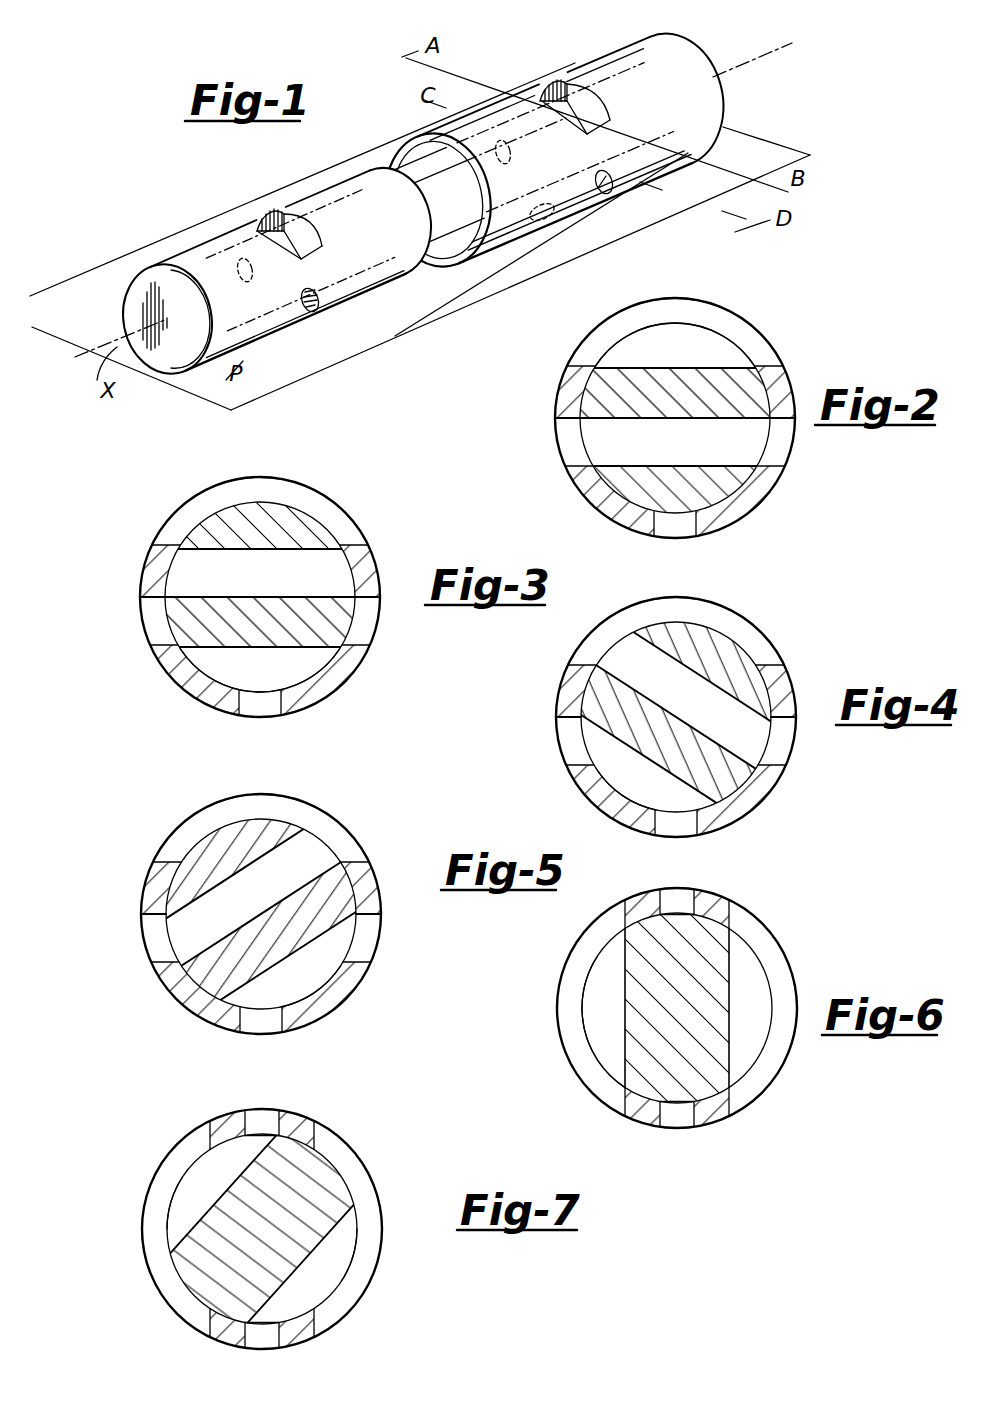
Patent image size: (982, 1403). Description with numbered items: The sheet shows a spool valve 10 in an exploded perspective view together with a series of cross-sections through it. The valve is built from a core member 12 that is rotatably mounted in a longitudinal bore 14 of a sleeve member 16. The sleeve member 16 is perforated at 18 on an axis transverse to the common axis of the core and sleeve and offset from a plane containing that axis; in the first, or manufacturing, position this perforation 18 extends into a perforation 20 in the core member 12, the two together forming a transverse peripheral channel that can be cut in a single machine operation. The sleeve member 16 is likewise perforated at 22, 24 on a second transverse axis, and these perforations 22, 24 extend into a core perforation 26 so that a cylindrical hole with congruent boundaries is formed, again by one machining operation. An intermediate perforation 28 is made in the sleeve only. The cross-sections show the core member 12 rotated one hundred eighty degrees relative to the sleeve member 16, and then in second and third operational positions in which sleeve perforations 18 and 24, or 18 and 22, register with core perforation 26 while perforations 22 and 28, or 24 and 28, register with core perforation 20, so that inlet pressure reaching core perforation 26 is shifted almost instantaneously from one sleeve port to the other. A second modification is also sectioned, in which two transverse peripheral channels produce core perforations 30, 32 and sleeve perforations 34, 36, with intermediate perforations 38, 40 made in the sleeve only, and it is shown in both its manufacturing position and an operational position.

In FIG. 1, the spool valve 10 is at (373, 168).
In FIG. 1, the core member 12 is at (332, 182).
In FIG. 2, the core member 12 is at (643, 443).
In FIG. 3, the core member 12 is at (260, 551).
In FIG. 4, the core member 12 is at (660, 696).
In FIG. 5, the core member 12 is at (247, 893).
In FIG. 6, the core member 12 is at (632, 1008).
In FIG. 7, the core member 12 is at (285, 1229).
In FIG. 1, the longitudinal bore 14 is at (431, 146).
In FIG. 1, the sleeve member 16 is at (613, 56).
In FIG. 2, the sleeve member 16 is at (699, 418).
In FIG. 3, the sleeve member 16 is at (286, 597).
In FIG. 4, the sleeve member 16 is at (702, 717).
In FIG. 5, the sleeve member 16 is at (287, 914).
In FIG. 6, the sleeve member 16 is at (677, 1004).
In FIG. 7, the sleeve member 16 is at (271, 1222).
In FIG. 1, the perforation 18 is at (560, 80).
In FIG. 2, the perforation 18 is at (679, 323).
In FIG. 3, the perforation 18 is at (260, 505).
In FIG. 4, the perforation 18 is at (683, 631).
In FIG. 5, the perforation 18 is at (261, 809).
In FIG. 1, the perforation 20 is at (277, 212).
In FIG. 2, the perforation 20 is at (675, 313).
In FIG. 3, the perforation 20 is at (258, 698).
In FIG. 4, the perforation 20 is at (613, 805).
In FIG. 5, the perforation 20 is at (350, 986).
In FIG. 1, the perforation 22 is at (610, 195).
In FIG. 2, the perforation 22 is at (544, 416).
In FIG. 3, the perforation 22 is at (137, 609).
In FIG. 4, the perforation 22 is at (559, 718).
In FIG. 5, the perforation 22 is at (130, 915).
In FIG. 1, the perforation 24 is at (505, 140).
In FIG. 2, the perforation 24 is at (796, 416).
In FIG. 3, the perforation 24 is at (377, 595).
In FIG. 4, the perforation 24 is at (798, 729).
In FIG. 5, the perforation 24 is at (390, 912).
In FIG. 1, the core perforation 26 is at (313, 313).
In FIG. 2, the core perforation 26 is at (684, 456).
In FIG. 3, the core perforation 26 is at (239, 635).
In FIG. 4, the core perforation 26 is at (692, 755).
In FIG. 5, the core perforation 26 is at (261, 917).
In FIG. 1, the intermediate perforation 28 is at (542, 222).
In FIG. 2, the intermediate perforation 28 is at (699, 539).
In FIG. 3, the intermediate perforation 28 is at (281, 711).
In FIG. 4, the intermediate perforation 28 is at (705, 835).
In FIG. 5, the intermediate perforation 28 is at (282, 1027).
In FIG. 6, the core perforation 30 is at (581, 1079).
In FIG. 7, the core perforation 30 is at (167, 1182).
In FIG. 6, the core perforation 32 is at (795, 1008).
In FIG. 7, the core perforation 32 is at (375, 1262).
In FIG. 6, the sleeve perforation 34 is at (550, 1008).
In FIG. 7, the sleeve perforation 34 is at (122, 1255).
In FIG. 6, the sleeve perforation 36 is at (784, 1087).
In FIG. 7, the sleeve perforation 36 is at (402, 1202).
In FIG. 6, the intermediate perforation 38 is at (672, 896).
In FIG. 7, the intermediate perforation 38 is at (269, 1117).
In FIG. 6, the intermediate perforation 40 is at (677, 1123).
In FIG. 7, the intermediate perforation 40 is at (272, 1341).